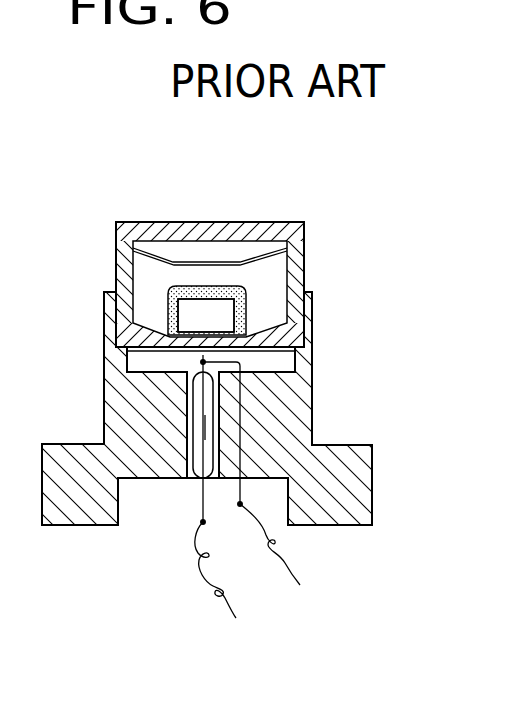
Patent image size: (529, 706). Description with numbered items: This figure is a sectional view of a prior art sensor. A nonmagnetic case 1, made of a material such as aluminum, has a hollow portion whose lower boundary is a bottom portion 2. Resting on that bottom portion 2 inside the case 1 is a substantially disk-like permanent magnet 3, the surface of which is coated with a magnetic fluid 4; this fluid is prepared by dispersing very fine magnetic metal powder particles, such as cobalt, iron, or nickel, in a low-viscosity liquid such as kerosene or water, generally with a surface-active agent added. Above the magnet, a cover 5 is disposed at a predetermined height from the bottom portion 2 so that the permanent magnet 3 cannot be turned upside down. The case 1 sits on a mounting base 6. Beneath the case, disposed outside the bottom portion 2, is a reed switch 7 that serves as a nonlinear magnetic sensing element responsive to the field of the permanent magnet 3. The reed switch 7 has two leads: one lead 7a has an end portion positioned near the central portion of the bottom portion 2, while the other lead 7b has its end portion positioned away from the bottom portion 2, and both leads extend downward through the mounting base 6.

The nonmagnetic case 1 is at (298, 253).
The bottom portion 2 is at (271, 326).
The permanent magnet 3 is at (247, 294).
The magnetic fluid 4 is at (170, 306).
The cover 5 is at (222, 263).
The mounting base 6 is at (303, 410).
The reed switch 7 is at (214, 484).
The lead 7a is at (199, 363).
The lead 7b is at (201, 493).